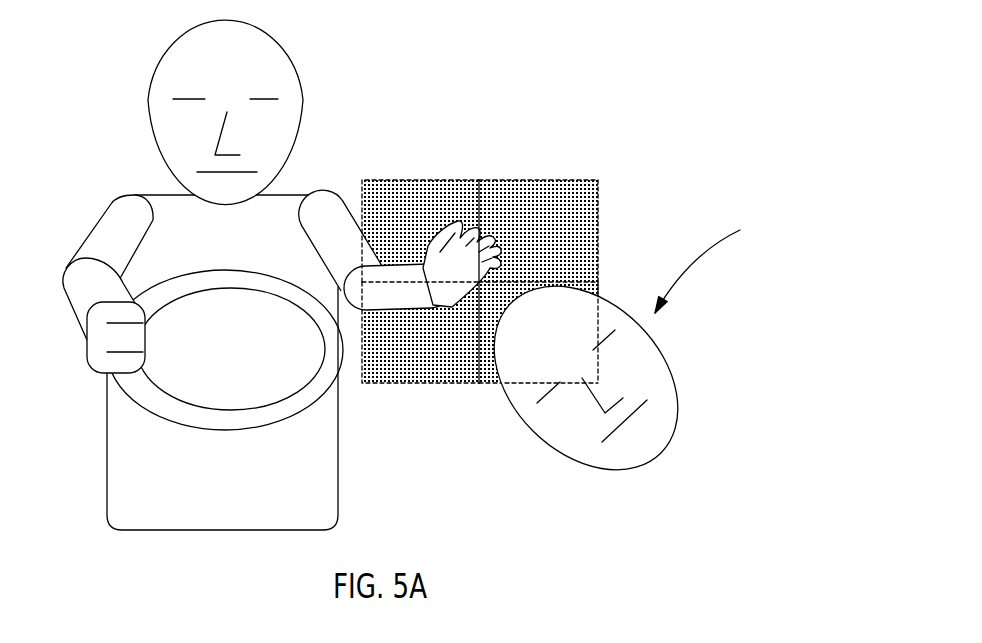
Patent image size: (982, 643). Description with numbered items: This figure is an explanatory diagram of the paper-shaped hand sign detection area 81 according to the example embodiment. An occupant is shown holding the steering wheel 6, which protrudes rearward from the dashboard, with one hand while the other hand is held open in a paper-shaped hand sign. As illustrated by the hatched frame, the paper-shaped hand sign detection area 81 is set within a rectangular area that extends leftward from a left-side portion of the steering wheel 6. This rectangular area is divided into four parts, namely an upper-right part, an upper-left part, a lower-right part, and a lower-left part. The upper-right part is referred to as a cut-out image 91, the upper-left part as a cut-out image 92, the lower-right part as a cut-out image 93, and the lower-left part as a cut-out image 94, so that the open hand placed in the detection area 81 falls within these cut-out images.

The steering wheel 6 is at (123, 400).
The paper-shaped hand sign detection area 81 is at (492, 242).
The cut-out image 91 is at (413, 200).
The cut-out image 92 is at (557, 197).
The cut-out image 93 is at (432, 375).
The cut-out image 94 is at (598, 288).